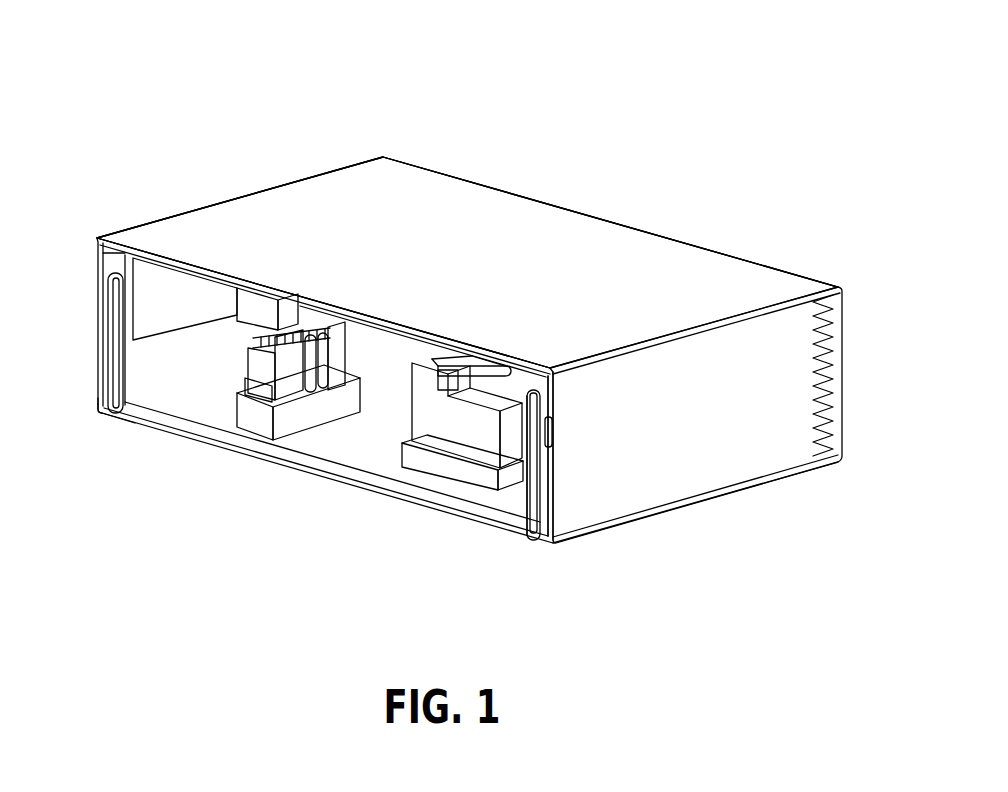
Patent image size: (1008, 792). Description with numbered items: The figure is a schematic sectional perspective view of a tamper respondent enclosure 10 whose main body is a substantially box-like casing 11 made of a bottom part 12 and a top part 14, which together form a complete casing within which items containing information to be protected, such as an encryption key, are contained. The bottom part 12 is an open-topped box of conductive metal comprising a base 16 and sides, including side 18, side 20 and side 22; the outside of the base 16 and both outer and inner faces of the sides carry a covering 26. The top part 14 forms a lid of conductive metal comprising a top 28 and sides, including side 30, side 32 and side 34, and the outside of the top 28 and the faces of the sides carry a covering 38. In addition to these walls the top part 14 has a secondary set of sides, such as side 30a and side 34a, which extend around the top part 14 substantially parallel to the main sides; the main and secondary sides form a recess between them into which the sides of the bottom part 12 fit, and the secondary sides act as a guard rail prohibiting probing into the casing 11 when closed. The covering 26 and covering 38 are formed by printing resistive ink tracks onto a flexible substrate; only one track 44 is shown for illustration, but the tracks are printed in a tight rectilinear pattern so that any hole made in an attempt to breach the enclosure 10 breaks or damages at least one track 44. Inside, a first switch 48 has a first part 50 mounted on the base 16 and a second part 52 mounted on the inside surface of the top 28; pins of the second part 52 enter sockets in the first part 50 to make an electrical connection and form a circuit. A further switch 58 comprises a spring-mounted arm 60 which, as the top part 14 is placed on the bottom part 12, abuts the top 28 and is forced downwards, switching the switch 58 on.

The tamper respondent enclosure 10 is at (645, 82).
The casing 11 is at (768, 417).
The bottom part 12 is at (222, 449).
The top part 14 is at (620, 240).
The base 16 is at (163, 420).
The side 18 is at (537, 510).
The side 20 is at (118, 328).
The side 22 is at (758, 263).
The covering 26 is at (130, 420).
The top 28 is at (422, 167).
The side 30 is at (551, 484).
The secondary side 30a is at (525, 438).
The side 32 is at (522, 198).
The side 34 is at (100, 372).
The secondary side 34a is at (130, 288).
The covering 38 is at (367, 182).
The resistive ink track 44 is at (828, 357).
The first switch 48 is at (326, 405).
The first part 50 is at (292, 422).
The second part 52 is at (258, 305).
The switch 58 is at (510, 443).
The spring-mounted arm 60 is at (477, 372).